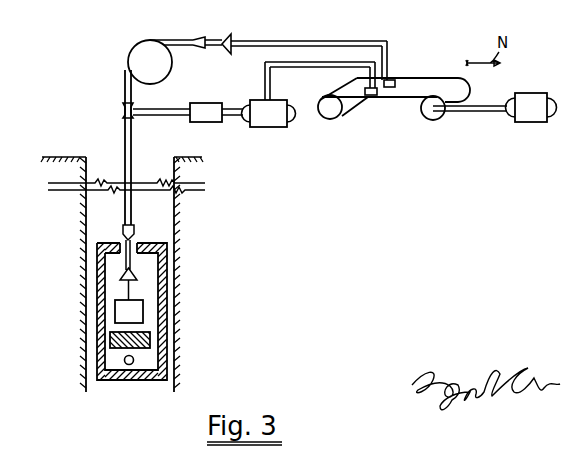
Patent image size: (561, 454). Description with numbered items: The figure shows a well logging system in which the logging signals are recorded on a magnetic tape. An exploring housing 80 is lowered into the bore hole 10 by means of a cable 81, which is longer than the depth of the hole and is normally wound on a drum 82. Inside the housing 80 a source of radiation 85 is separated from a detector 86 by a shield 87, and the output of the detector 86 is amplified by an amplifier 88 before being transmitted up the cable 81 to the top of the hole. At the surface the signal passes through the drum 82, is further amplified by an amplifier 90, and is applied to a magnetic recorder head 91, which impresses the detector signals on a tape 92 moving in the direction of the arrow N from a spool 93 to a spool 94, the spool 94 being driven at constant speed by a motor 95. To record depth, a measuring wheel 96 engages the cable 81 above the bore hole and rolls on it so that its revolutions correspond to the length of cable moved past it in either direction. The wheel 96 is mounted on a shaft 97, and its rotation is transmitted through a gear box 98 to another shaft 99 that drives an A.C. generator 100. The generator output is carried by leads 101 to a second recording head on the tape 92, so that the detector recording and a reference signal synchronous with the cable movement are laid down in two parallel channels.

The bore hole 10 is at (103, 217).
The housing 80 is at (160, 252).
The cable 81 is at (133, 212).
The drum 82 is at (150, 62).
The source of radiation 85 is at (134, 360).
The detector 86 is at (200, 308).
The shield 87 is at (150, 340).
The amplifier 88 is at (166, 272).
The amplifier 90 is at (232, 36).
The magnetic recorder head 91 is at (395, 80).
The tape 92 is at (417, 88).
The spool 93 is at (330, 118).
The spool 94 is at (435, 120).
The motor 95 is at (495, 107).
The measuring wheel 96 is at (123, 111).
The shaft 97 is at (168, 110).
The gear box 98 is at (180, 128).
The shaft 99 is at (232, 108).
The A.C. generator 100 is at (269, 113).
The leads 101 is at (310, 66).